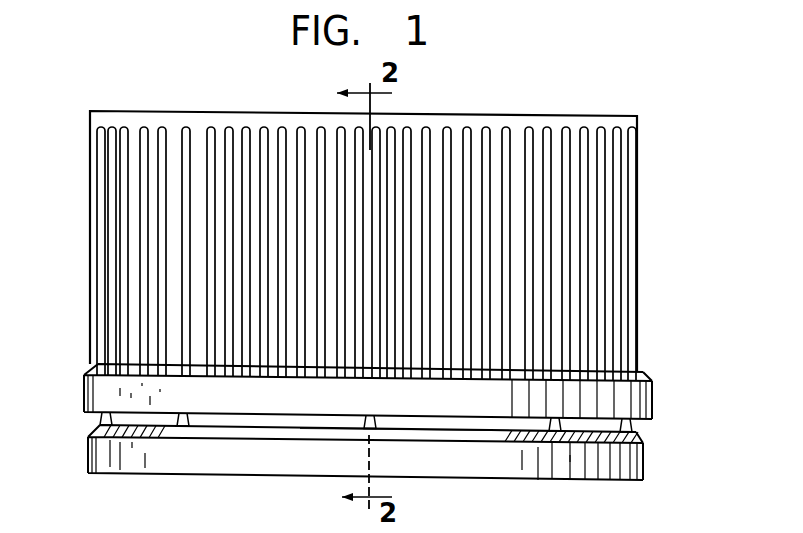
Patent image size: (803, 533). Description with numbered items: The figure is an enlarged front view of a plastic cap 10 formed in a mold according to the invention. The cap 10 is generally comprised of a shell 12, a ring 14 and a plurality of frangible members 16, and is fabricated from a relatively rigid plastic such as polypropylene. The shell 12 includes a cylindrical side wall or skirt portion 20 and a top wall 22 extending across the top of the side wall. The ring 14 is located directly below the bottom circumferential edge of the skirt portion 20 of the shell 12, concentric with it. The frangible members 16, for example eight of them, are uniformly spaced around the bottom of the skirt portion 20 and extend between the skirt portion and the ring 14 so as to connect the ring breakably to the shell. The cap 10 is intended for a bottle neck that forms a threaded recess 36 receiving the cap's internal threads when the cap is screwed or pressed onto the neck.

The plastic cap 10 is at (371, 289).
The shell 12 is at (342, 242).
The ring 14 is at (88, 453).
The frangible members 16 is at (203, 412).
The cylindrical side wall or skirt portion 20 is at (160, 235).
The top wall 22 is at (548, 114).
The threaded recess 36 is at (462, 423).